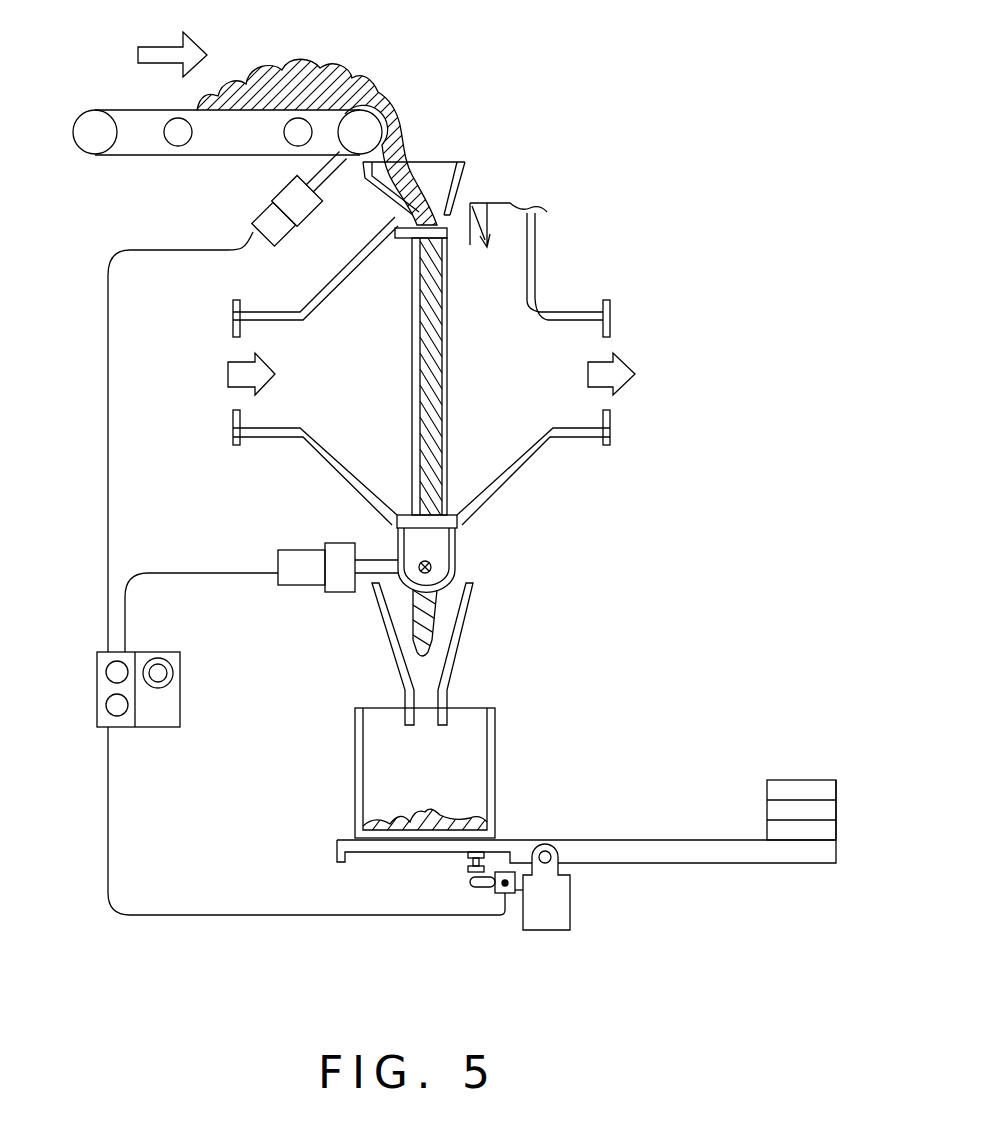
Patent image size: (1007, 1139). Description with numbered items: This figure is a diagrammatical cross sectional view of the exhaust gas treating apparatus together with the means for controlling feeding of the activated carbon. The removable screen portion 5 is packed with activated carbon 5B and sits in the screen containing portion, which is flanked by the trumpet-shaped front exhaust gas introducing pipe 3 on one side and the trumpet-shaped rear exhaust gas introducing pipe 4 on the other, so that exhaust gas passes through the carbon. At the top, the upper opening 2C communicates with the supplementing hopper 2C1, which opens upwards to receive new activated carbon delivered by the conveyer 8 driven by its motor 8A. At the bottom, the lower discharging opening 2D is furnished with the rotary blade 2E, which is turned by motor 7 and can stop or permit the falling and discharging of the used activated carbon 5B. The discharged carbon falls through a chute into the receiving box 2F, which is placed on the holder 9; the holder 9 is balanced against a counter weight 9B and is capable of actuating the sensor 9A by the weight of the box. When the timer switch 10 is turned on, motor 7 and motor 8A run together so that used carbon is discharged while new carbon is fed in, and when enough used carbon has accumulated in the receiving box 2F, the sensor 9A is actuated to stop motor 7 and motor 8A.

The upper opening 2C is at (458, 203).
The supplementing hopper 2C1 is at (445, 212).
The lower discharging opening 2D is at (452, 542).
The rotary blade 2E is at (447, 568).
The receiving box 2F is at (495, 765).
The front exhaust gas introducing pipe 3 is at (540, 452).
The rear exhaust gas introducing pipe 4 is at (317, 457).
The screen portion 5 is at (501, 379).
The activated carbon 5B is at (432, 463).
The motor 7 is at (305, 585).
The conveyer 8 is at (130, 157).
The motor 8A is at (255, 222).
The holder 9 is at (633, 848).
The sensor 9A is at (505, 883).
The counter weight 9B is at (825, 808).
The timer switch 10 is at (160, 716).